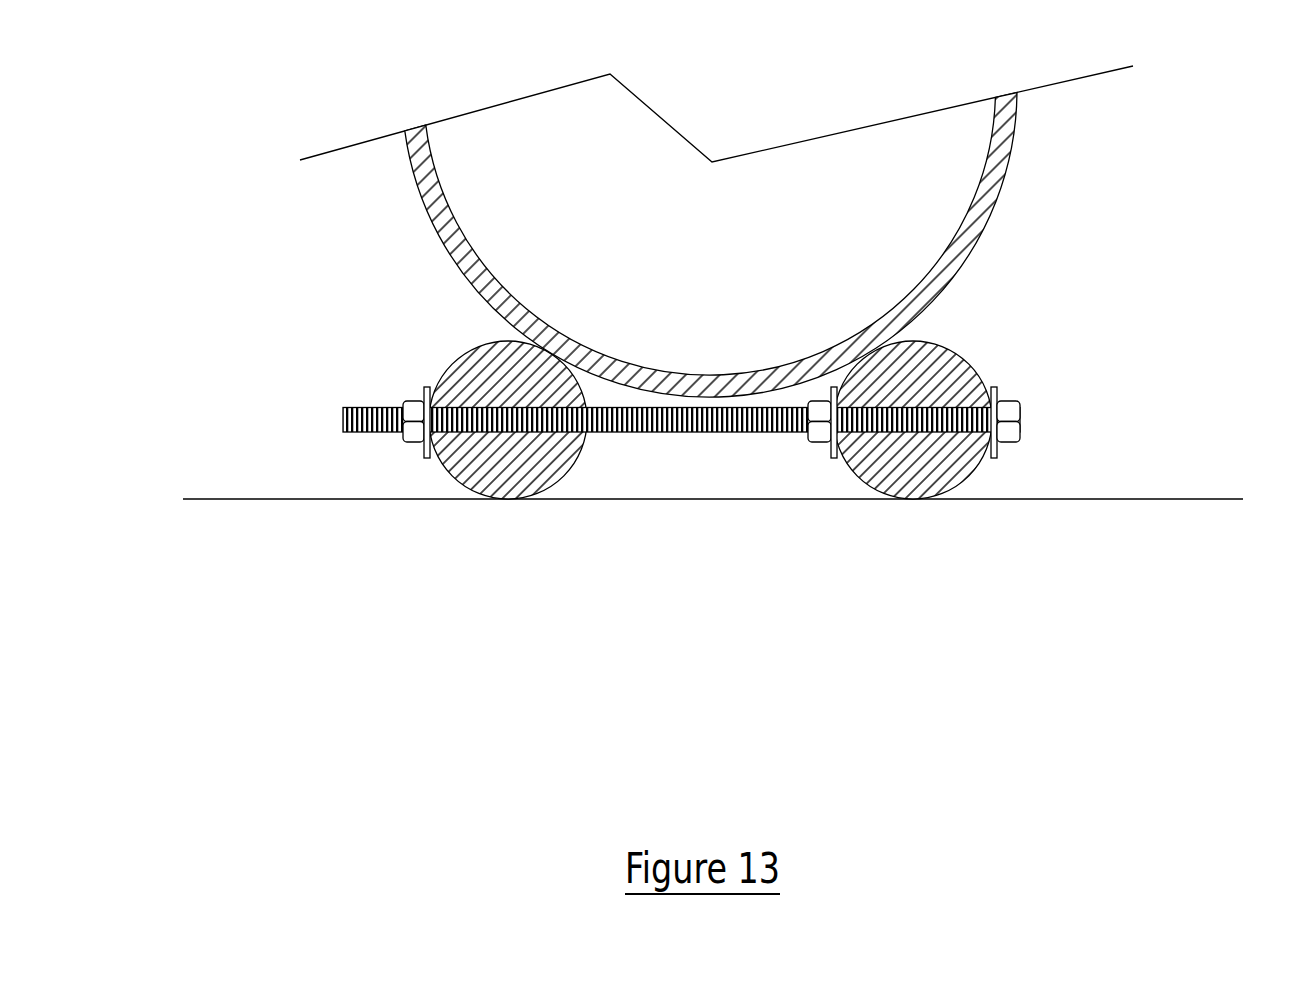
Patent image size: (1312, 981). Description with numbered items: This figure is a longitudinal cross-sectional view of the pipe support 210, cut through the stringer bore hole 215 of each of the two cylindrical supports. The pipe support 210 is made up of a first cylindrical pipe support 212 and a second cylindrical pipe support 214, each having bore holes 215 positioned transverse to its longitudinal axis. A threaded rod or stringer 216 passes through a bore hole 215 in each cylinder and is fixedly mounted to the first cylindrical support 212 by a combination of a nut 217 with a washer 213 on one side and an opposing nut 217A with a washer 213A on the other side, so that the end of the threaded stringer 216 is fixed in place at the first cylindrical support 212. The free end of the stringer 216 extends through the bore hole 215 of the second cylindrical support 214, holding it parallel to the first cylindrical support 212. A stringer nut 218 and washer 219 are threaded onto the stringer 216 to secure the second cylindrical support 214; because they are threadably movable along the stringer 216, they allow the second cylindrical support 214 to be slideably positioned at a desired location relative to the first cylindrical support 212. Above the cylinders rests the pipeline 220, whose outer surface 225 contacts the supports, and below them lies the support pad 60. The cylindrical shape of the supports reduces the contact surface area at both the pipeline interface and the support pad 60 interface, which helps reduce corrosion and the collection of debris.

The support pad 60 is at (701, 464).
The pipe support 210 is at (711, 525).
The first cylindrical pipe support 212 is at (1020, 396).
The washer 213 is at (917, 505).
The washer 213A is at (1134, 403).
The second cylindrical pipe support 214 is at (407, 394).
The bore hole 215 is at (741, 506).
The threaded rod or stringer 216 is at (681, 525).
The nut 217 is at (884, 535).
The nut 217A is at (1114, 477).
The stringer nut 218 is at (284, 493).
The washer 219 is at (323, 518).
The pipeline 220 is at (773, 142).
The outer surface 225 is at (822, 245).